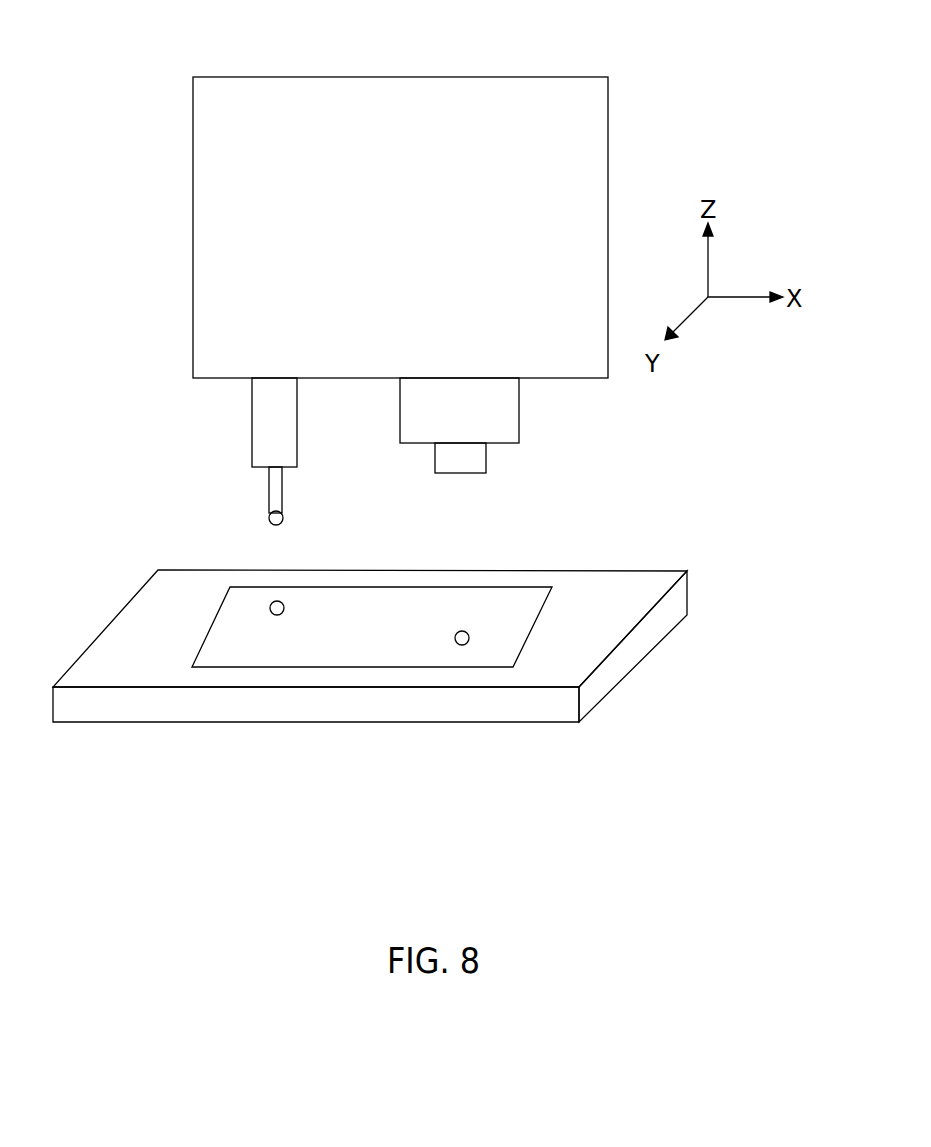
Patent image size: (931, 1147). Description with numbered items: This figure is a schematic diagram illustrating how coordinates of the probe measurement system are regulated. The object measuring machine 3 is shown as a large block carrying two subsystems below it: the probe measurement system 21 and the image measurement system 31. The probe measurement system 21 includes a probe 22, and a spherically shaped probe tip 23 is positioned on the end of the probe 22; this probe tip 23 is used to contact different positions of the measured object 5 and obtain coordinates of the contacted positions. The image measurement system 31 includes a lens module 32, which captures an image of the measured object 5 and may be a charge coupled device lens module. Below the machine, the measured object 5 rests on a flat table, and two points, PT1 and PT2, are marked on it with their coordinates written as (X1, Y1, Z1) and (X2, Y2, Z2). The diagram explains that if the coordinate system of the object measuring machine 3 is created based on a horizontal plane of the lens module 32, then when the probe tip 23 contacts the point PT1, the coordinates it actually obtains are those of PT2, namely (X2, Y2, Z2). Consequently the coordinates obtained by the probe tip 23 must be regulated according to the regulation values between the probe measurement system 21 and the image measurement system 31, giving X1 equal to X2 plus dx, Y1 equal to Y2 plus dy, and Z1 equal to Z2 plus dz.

The object measuring machine 3 is at (400, 77).
The probe measurement system 21 is at (252, 418).
The probe 22 is at (282, 493).
The probe tip 23 is at (265, 517).
The image measurement system 31 is at (519, 408).
The lens module 32 is at (486, 457).
The measured object 5 is at (372, 583).
The point PT1 is at (272, 602).
The point PT2 is at (469, 637).